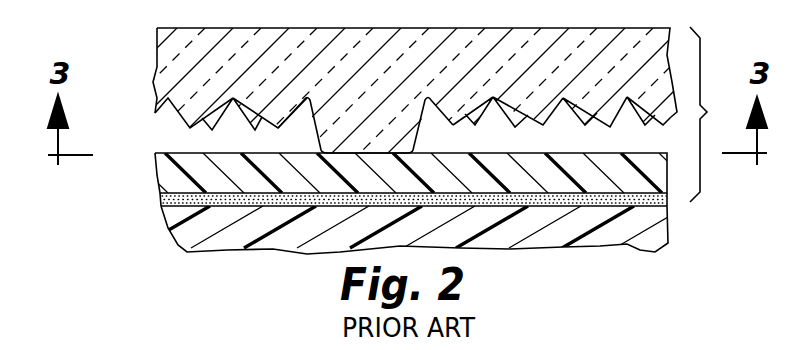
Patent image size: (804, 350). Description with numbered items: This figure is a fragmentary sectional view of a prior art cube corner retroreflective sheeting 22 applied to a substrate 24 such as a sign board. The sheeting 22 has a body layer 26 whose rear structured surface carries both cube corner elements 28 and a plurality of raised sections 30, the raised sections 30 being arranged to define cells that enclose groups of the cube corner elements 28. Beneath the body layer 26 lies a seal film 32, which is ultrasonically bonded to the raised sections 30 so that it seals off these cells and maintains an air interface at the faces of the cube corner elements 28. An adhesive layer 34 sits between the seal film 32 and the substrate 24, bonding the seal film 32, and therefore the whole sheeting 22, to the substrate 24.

The sheeting 22 is at (714, 114).
The substrate 24 is at (187, 250).
The body layer 26 is at (158, 66).
The cube corner elements 28 is at (540, 115).
The raised sections 30 is at (410, 127).
The seal film 32 is at (160, 173).
The adhesive layer 34 is at (162, 198).